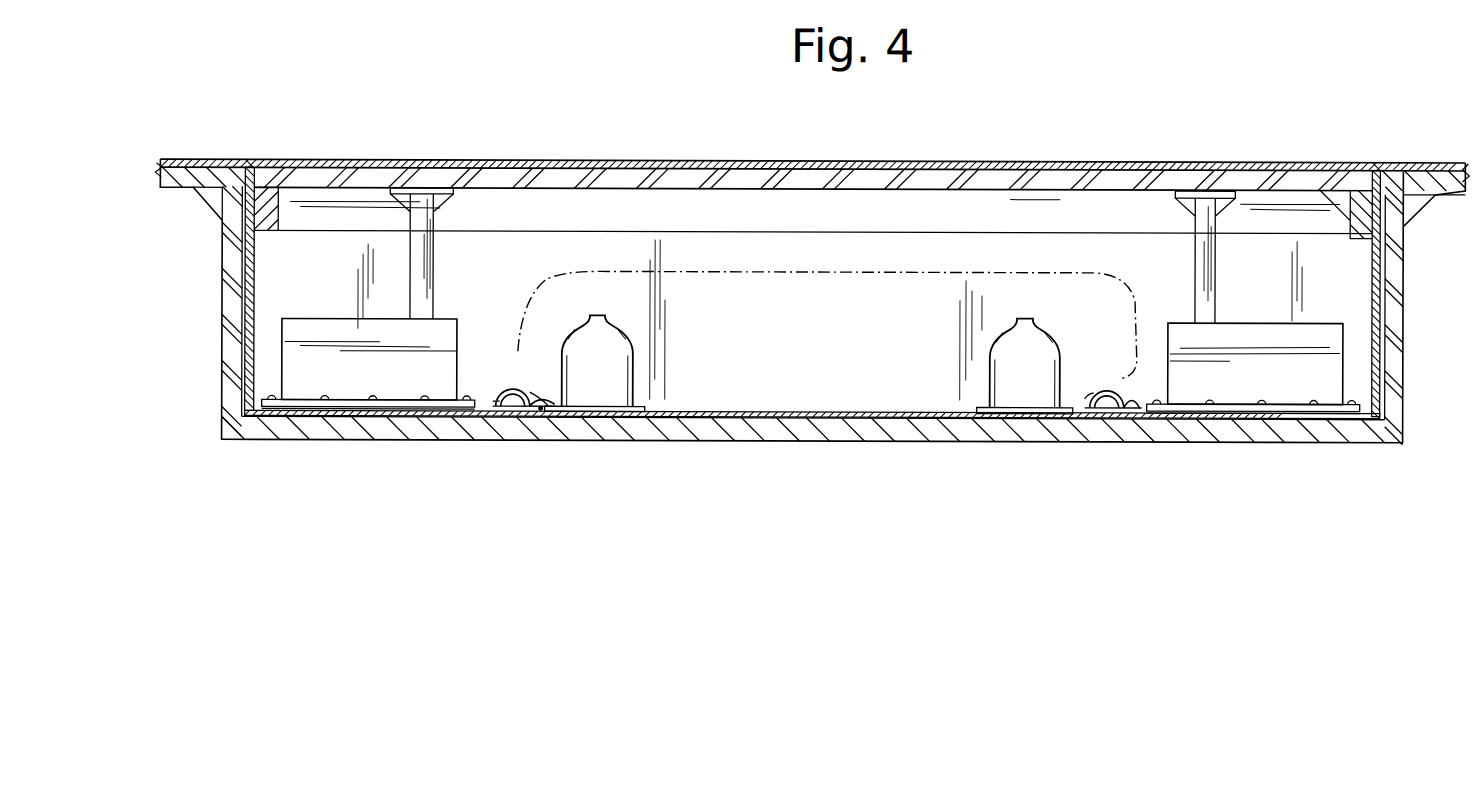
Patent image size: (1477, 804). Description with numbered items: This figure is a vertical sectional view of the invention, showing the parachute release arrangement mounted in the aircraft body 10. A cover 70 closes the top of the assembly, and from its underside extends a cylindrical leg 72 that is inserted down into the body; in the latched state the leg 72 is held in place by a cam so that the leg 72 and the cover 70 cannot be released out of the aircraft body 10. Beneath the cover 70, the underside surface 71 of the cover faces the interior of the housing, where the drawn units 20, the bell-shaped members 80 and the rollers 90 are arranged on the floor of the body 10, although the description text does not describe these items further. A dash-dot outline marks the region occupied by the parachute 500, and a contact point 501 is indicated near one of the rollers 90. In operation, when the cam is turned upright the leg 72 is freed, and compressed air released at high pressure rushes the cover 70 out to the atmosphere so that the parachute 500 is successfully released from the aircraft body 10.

The aircraft body 10 is at (183, 151).
The electrode unit 20 is at (457, 334).
The cover 70 is at (683, 160).
The lower surface of cover 71 is at (798, 188).
The leg 72 is at (435, 268).
The bell-shaped member 80 is at (636, 348).
The roller 90 is at (508, 390).
The parachute 500 is at (804, 267).
The contact point 501 is at (541, 412).